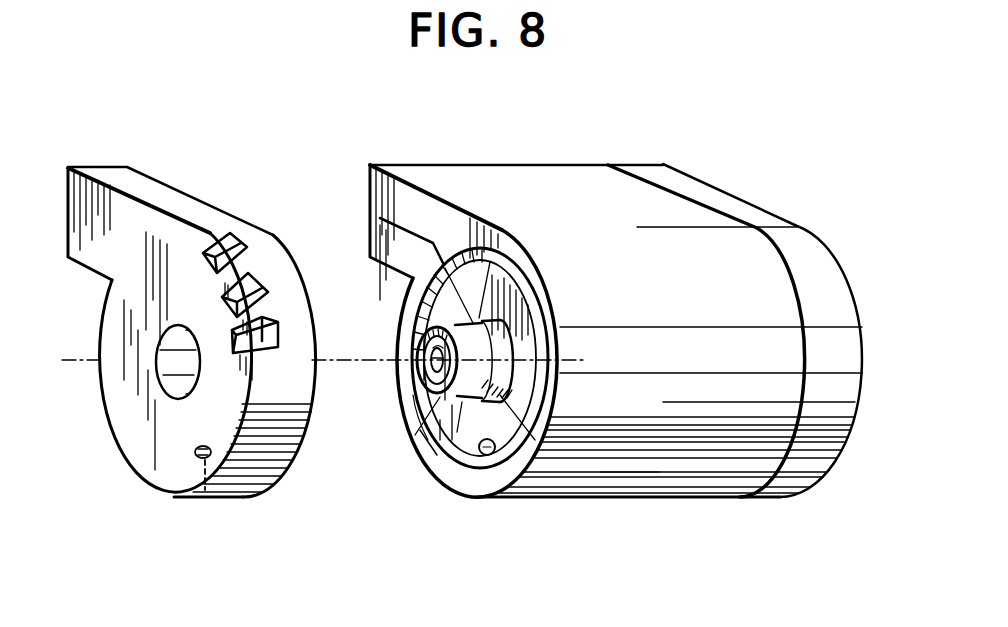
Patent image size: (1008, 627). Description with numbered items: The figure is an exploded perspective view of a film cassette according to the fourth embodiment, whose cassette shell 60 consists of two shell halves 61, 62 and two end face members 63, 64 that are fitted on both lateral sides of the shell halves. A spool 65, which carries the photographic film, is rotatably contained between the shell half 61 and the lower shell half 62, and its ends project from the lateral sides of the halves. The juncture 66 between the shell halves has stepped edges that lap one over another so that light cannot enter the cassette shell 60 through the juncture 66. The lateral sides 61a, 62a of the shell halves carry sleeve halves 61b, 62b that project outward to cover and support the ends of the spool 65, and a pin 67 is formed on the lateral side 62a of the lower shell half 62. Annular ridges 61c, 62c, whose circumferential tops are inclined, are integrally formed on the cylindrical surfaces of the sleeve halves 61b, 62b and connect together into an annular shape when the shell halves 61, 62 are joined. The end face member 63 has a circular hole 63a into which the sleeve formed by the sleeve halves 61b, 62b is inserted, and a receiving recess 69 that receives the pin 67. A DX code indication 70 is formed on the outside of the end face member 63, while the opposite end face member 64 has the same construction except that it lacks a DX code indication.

The cassette shell 60 is at (702, 190).
The shell half 61 is at (562, 175).
The lateral side 61a is at (500, 277).
The sleeve half 61b is at (520, 368).
The annular ridge 61c is at (492, 350).
The lower shell half 62 is at (706, 492).
The lateral side 62a is at (562, 408).
The sleeve half 62b is at (427, 355).
The annular ridge 62c is at (432, 456).
The end face member 63 is at (170, 205).
The circular hole 63a is at (175, 398).
The end face member 64 is at (792, 226).
The spool 65 is at (404, 418).
The juncture 66 is at (628, 476).
The pin 67 is at (497, 463).
The receiving recess 69 is at (207, 495).
The DX code indication 70 is at (246, 265).